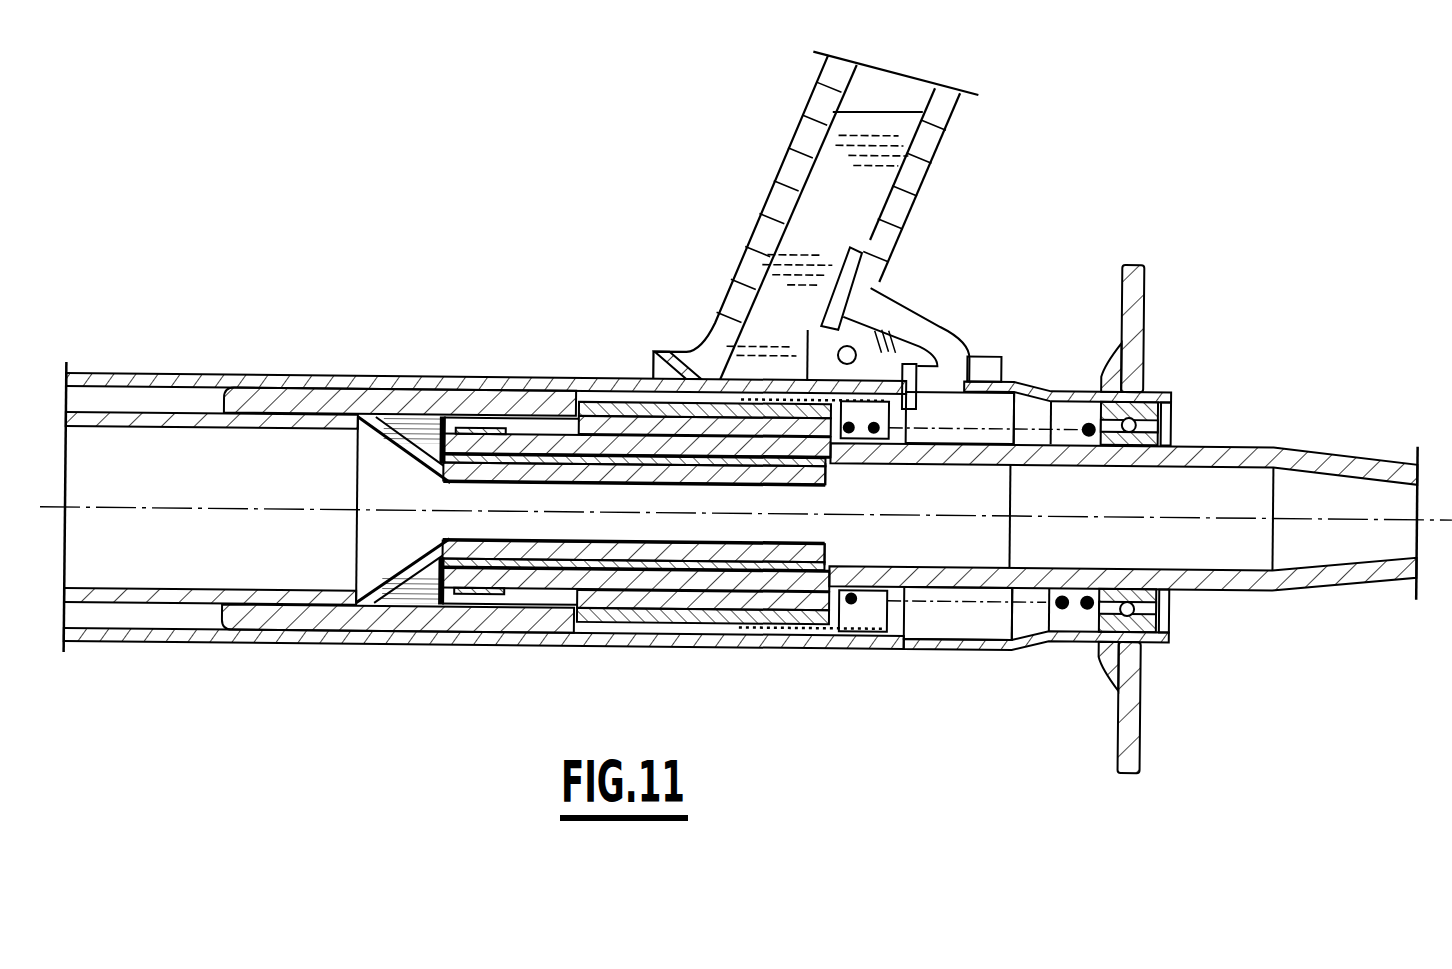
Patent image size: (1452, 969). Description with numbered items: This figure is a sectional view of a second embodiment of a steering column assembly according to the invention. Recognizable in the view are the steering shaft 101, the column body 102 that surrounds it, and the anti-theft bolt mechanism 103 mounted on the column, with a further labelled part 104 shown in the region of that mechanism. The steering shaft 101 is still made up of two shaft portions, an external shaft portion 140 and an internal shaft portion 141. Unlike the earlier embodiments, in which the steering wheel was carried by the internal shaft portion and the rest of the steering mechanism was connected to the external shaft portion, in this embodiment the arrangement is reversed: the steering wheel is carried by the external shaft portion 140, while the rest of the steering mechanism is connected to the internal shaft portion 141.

The steering shaft 101 is at (1245, 423).
The column body 102 is at (498, 362).
The anti-theft bolt mechanism 103 is at (752, 174).
The latch lever 104 is at (913, 88).
The external shaft portion 140 is at (1246, 612).
The internal shaft portion 141 is at (178, 614).